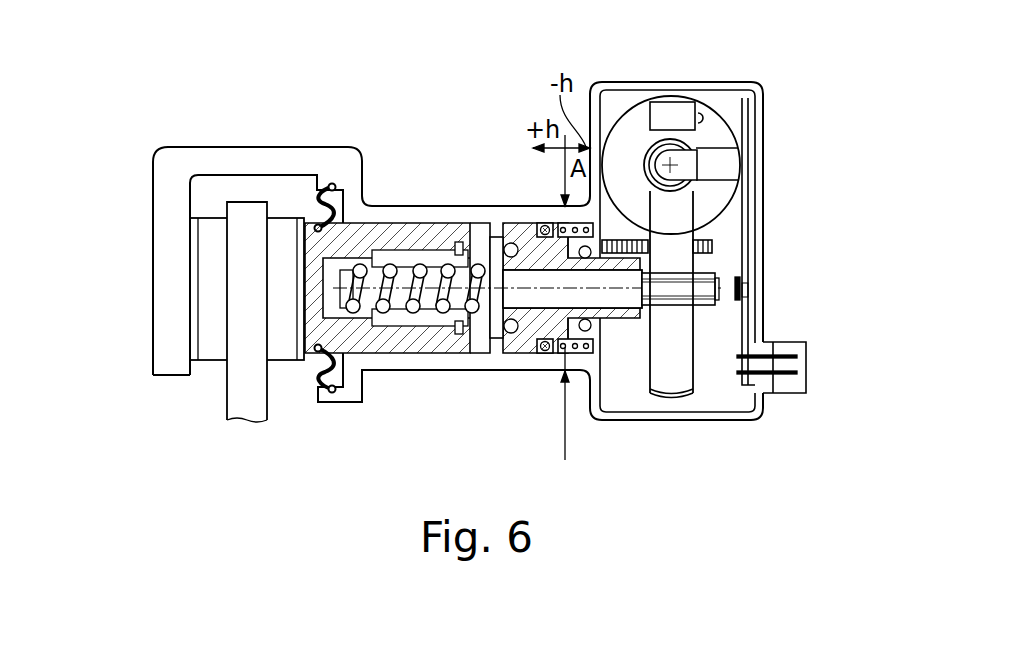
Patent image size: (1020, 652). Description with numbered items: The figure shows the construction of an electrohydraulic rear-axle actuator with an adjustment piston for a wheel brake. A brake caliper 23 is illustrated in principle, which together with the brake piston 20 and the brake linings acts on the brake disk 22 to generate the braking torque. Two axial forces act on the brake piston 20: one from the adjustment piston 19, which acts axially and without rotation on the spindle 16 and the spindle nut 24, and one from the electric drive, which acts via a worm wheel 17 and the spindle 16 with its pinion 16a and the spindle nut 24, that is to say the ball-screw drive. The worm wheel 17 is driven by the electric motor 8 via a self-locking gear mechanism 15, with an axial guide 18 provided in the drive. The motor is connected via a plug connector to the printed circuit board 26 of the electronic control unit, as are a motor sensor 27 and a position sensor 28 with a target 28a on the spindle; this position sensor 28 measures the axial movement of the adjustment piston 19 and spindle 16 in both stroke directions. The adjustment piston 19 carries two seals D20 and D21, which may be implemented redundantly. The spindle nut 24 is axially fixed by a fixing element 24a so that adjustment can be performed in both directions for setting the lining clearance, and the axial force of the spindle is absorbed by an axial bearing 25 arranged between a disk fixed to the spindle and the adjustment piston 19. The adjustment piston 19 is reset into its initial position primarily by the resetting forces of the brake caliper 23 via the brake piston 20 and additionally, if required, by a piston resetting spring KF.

The electric motor 8 is at (638, 100).
The self-locking gear mechanism 15 is at (647, 150).
The spindle with pinion 16 is at (497, 262).
The pinion 16a is at (705, 273).
The worm wheel 17 is at (680, 367).
The axial guide 18 is at (712, 240).
The adjustment piston 19 is at (528, 228).
The brake piston 20 is at (397, 236).
The brake disk 22 is at (247, 213).
The brake caliper 23 is at (172, 284).
The spindle nut 24 is at (397, 323).
The fixing element 24a is at (452, 323).
The axial bearing 25 is at (507, 340).
The printed circuit board of the ECU 26 is at (743, 125).
The motor sensor 27 is at (285, 340).
The position sensor 28 is at (740, 285).
The target of the position sensor 28a is at (745, 295).
The seal D20 is at (539, 421).
The seal D21 is at (587, 350).
The piston resetting spring KF is at (572, 190).